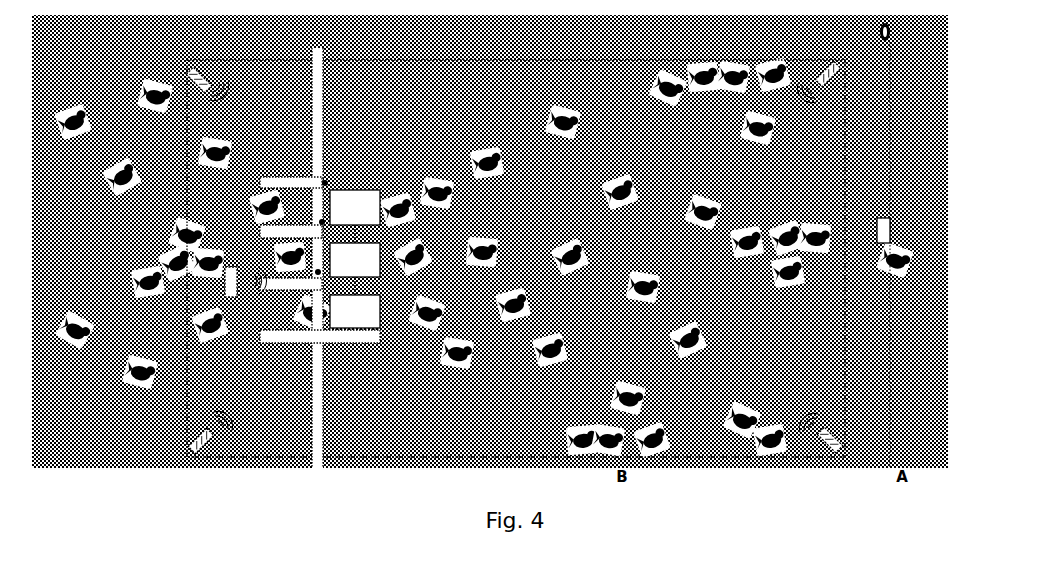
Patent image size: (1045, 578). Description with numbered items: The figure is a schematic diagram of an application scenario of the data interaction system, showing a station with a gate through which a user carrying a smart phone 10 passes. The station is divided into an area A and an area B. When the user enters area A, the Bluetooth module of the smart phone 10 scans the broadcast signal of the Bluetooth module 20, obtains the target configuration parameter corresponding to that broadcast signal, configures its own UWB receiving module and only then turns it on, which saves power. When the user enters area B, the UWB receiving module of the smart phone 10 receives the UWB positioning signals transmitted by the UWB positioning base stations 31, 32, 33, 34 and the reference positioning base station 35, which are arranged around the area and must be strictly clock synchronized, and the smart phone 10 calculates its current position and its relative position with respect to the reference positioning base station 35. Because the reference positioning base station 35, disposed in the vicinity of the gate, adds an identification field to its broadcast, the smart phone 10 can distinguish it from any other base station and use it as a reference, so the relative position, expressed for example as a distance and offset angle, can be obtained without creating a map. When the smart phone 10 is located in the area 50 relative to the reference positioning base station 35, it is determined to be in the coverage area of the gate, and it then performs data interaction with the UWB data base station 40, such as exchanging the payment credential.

The smart phone 10 is at (881, 221).
The Bluetooth module 20 is at (893, 42).
The UWB positioning base station 31 is at (830, 82).
The UWB positioning base station 32 is at (834, 420).
The UWB positioning base station 33 is at (205, 62).
The UWB positioning base station 34 is at (218, 435).
The reference positioning base station 35 is at (232, 265).
The UWB data base station 40 is at (320, 272).
The area 50 is at (374, 303).